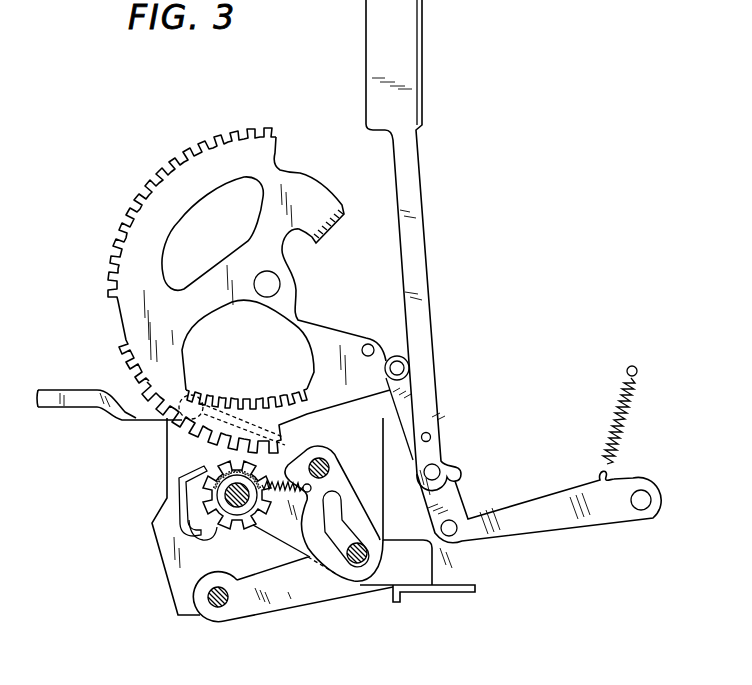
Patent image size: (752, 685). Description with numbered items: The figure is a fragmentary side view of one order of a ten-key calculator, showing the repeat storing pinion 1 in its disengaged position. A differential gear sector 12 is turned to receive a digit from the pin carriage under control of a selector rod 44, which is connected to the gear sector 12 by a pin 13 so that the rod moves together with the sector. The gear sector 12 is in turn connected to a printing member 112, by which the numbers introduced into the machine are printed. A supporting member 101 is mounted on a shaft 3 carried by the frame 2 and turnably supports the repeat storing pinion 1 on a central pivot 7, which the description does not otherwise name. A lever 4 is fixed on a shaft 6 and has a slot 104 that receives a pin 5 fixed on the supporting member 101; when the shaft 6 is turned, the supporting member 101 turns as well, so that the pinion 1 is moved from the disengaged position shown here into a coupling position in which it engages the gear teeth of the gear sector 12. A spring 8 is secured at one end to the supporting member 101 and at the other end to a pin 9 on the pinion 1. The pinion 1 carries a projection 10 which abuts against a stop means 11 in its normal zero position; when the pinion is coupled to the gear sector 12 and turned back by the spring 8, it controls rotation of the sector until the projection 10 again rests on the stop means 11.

The repeat storing pinion 1 is at (236, 502).
The frame 2 is at (173, 455).
The shaft 3 is at (326, 468).
The lever 4 is at (296, 590).
The pin 5 is at (359, 563).
The shaft 6 is at (215, 607).
The shaft 7 is at (231, 505).
The spring 8 is at (298, 455).
The pin 9 is at (224, 479).
The projection 10 is at (179, 486).
The stop means 11 is at (198, 515).
The differential gear sector 12 is at (148, 237).
The pin 13 is at (200, 418).
The selector rod 44 is at (88, 392).
The supporting member 101 is at (343, 497).
The slot 104 is at (357, 527).
The printing member 112 is at (428, 320).